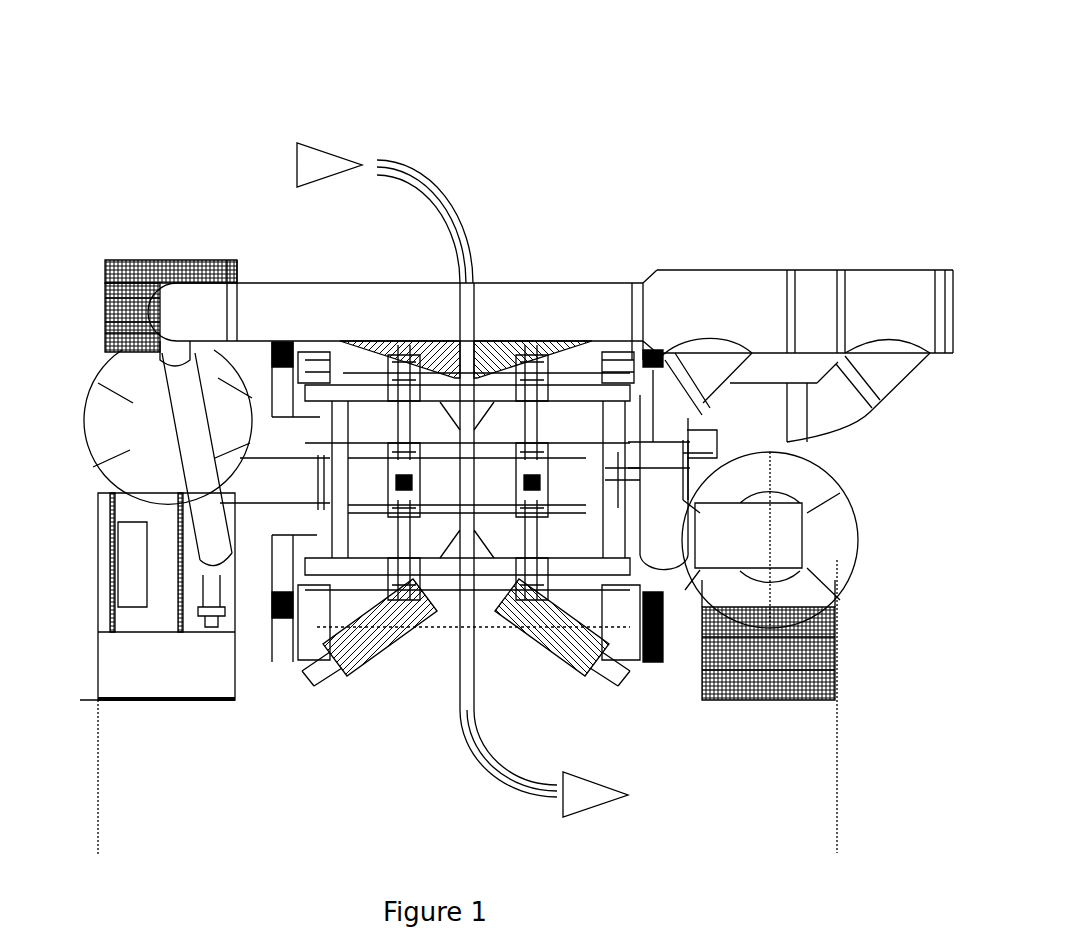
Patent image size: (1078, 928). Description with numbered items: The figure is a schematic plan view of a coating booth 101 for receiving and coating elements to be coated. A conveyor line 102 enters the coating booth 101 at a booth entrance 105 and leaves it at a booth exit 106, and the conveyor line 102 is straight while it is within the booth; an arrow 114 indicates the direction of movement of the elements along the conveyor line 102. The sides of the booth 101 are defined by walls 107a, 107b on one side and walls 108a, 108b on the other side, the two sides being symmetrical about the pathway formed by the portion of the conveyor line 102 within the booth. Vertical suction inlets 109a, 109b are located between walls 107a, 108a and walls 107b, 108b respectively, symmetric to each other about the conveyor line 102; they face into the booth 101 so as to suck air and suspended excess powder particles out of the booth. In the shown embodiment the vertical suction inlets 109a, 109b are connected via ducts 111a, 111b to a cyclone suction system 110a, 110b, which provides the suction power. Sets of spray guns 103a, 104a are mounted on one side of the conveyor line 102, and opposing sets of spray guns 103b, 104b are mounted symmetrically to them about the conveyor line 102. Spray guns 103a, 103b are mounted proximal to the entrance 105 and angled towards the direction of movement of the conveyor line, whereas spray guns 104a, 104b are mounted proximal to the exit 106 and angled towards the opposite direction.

The coating booth 101 is at (576, 211).
The conveyor line 102 is at (440, 183).
The spray gun 103a is at (420, 343).
The spray gun 103b is at (540, 343).
The spray gun 104a is at (380, 667).
The spray gun 104b is at (568, 647).
The booth entrance 105 is at (457, 313).
The booth exit 106 is at (478, 650).
The wall 107a is at (397, 420).
The wall 107b is at (537, 420).
The wall 108a is at (403, 537).
The wall 108b is at (535, 543).
The vertical suction inlet 109a is at (397, 477).
The vertical suction inlet 109b is at (543, 478).
The cyclone suction system 110a is at (97, 402).
The cyclone suction system 110b is at (843, 540).
The duct 111a is at (265, 488).
The duct 111b is at (710, 623).
The arrow 114 is at (307, 172).